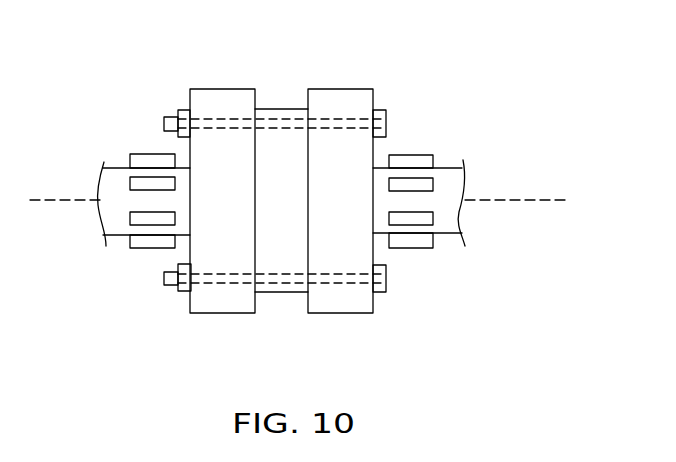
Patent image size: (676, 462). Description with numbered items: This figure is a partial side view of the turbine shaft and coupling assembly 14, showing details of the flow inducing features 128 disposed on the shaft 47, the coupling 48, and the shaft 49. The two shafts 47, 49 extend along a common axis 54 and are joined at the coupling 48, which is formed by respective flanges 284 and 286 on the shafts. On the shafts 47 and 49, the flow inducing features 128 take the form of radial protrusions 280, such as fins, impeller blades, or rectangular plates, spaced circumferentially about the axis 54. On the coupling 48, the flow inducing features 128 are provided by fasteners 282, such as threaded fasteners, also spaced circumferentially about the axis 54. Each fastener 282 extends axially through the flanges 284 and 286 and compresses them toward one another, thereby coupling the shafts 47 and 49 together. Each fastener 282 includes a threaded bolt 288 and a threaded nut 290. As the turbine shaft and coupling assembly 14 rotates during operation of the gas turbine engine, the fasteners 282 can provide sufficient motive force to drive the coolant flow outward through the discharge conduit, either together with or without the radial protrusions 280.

The turbine shaft and coupling assembly 14 is at (543, 57).
The shaft 47 is at (118, 173).
The coupling 48 is at (223, 313).
The shaft 49 is at (445, 218).
The axis 54 is at (513, 200).
The flow inducing features 128 is at (393, 91).
The radial protrusions 280 is at (152, 154).
The fasteners 282 is at (183, 91).
The flange 284 is at (244, 88).
The flange 286 is at (355, 88).
The threaded bolt 288 is at (386, 278).
The threaded nut 290 is at (172, 286).